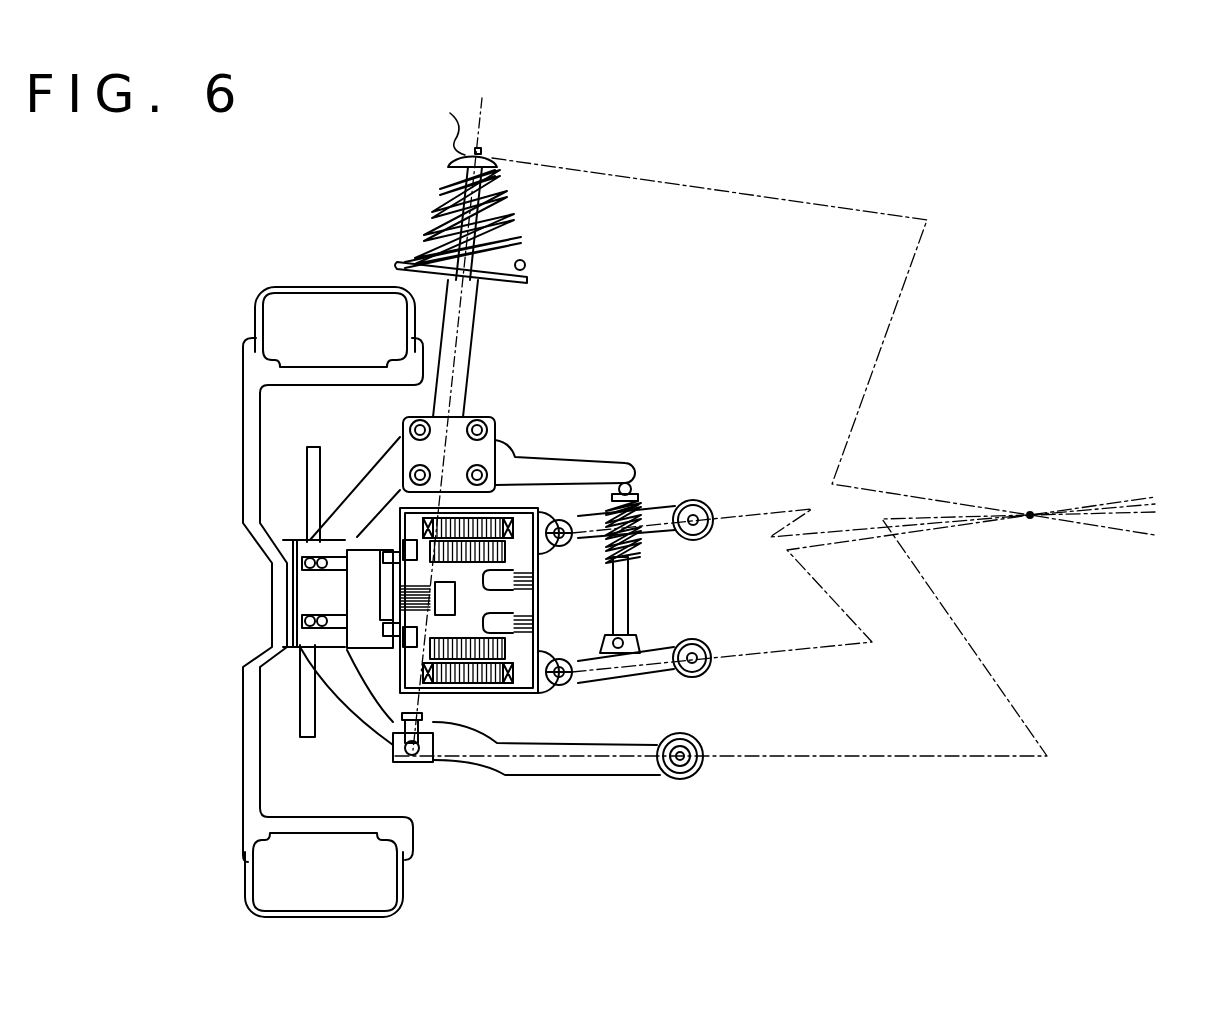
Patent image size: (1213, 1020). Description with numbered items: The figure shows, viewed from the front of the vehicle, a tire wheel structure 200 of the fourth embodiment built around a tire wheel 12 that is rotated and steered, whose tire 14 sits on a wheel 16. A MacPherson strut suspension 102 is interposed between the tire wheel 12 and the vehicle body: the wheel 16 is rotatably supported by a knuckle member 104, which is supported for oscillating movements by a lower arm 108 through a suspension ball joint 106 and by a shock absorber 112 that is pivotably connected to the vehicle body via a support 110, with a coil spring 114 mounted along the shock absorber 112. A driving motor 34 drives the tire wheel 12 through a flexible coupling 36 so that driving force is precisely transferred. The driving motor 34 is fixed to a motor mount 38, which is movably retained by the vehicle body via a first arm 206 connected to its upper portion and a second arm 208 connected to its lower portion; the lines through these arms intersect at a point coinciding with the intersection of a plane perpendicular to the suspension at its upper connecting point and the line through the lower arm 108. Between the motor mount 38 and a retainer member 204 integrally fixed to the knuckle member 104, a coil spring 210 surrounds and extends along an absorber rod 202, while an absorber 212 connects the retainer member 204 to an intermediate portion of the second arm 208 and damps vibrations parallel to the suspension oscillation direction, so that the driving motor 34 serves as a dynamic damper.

The tire wheel 12 is at (160, 675).
The tire 14 is at (240, 832).
The wheel 16 is at (237, 683).
The driving motor 34 is at (520, 540).
The flexible coupling 36 is at (367, 652).
The motor mount 38 is at (487, 693).
The MacPherson strut suspension 102 is at (570, 199).
The knuckle member 104 is at (372, 465).
The suspension ball joint 106 is at (417, 760).
The lower arm 108 is at (630, 767).
The support 110 is at (492, 158).
The shock absorber 112 is at (473, 350).
The coil spring 114 is at (443, 203).
The tire wheel structure 200 is at (615, 331).
The absorber rod 202 is at (632, 593).
The retainer member 204 is at (596, 462).
The first arm 206 is at (667, 537).
The second arm 208 is at (663, 635).
The coil spring 210 is at (645, 500).
The absorber 212 is at (610, 577).